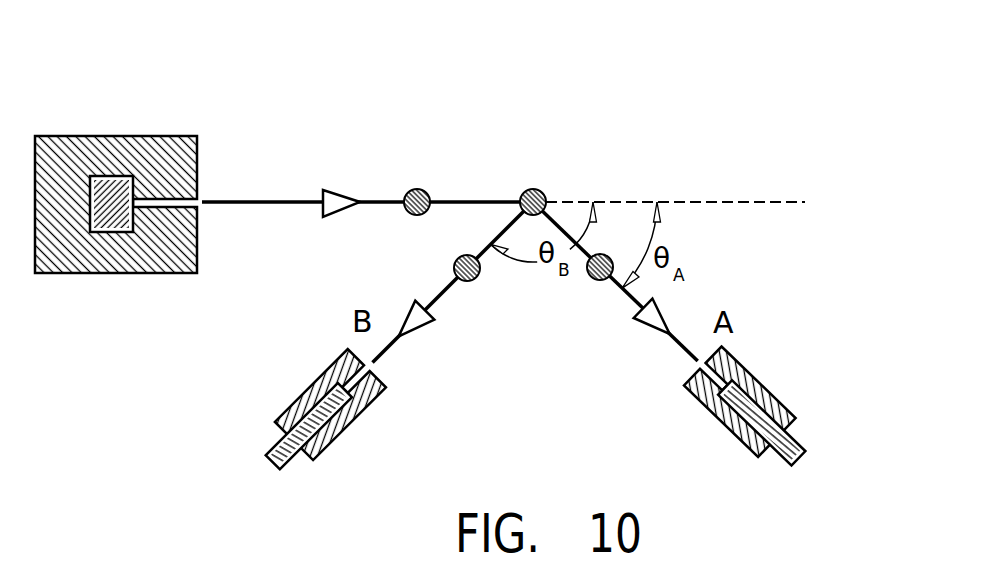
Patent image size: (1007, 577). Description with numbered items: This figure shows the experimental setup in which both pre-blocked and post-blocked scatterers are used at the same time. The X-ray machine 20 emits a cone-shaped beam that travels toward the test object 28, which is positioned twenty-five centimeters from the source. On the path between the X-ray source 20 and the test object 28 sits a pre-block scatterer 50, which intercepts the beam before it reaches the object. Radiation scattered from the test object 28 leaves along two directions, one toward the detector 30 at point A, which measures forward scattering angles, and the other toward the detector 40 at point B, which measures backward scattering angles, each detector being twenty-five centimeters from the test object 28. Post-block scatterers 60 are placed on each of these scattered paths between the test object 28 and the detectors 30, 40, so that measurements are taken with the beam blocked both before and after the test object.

The X-ray machine 20 is at (140, 80).
The test object 28 is at (543, 192).
The detector 30 is at (773, 398).
The detector 40 is at (320, 381).
The pre-block scatterer 50 is at (423, 190).
The post-block scatterers 60 is at (479, 280).